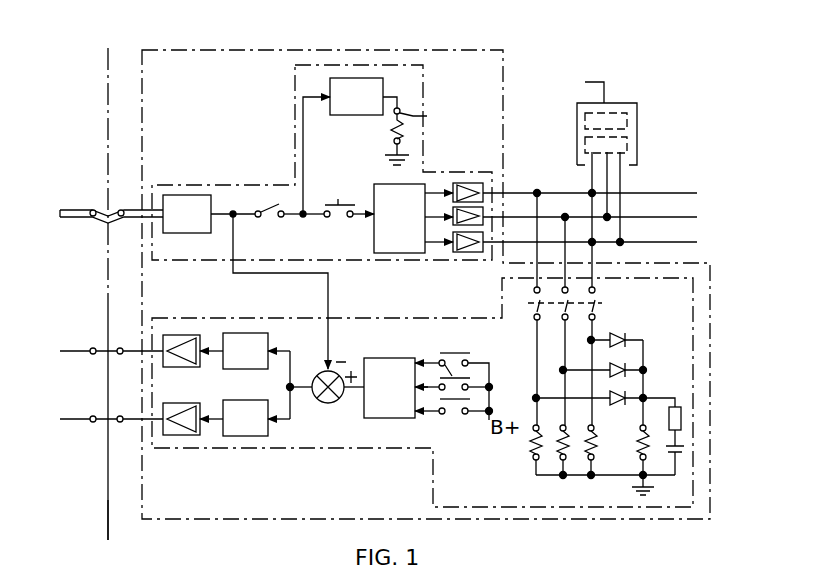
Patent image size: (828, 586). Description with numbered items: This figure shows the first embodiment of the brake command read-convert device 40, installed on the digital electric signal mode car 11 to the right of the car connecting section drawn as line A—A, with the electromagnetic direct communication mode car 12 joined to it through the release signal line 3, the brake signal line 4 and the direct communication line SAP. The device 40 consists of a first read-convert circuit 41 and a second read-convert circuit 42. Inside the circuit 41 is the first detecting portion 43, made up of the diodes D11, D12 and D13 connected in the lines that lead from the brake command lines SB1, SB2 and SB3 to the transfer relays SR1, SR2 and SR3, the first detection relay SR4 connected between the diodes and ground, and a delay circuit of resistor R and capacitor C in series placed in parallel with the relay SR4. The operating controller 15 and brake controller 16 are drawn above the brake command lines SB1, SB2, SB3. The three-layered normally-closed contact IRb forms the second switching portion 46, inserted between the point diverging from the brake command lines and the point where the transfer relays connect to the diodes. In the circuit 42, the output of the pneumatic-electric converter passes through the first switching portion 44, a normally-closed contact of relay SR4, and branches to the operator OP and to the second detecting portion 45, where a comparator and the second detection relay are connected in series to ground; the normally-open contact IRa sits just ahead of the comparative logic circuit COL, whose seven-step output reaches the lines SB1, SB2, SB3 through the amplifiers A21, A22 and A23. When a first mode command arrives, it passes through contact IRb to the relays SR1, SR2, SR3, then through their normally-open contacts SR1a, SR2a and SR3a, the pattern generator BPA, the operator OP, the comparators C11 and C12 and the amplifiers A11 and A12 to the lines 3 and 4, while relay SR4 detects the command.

The release signal line 3 is at (72, 351).
The brake signal line 4 is at (72, 419).
The digital electric signal mode car 11 is at (111, 533).
The electromagnetic direct communication mode car 12 is at (104, 536).
The operating controller 15 is at (629, 123).
The brake controller 16 is at (629, 148).
The brake command read-convert device 40 is at (302, 48).
The first read-convert circuit 41 is at (297, 450).
The second read-convert circuit 42 is at (293, 90).
The first detecting portion 43 is at (692, 428).
The first switching portion 44 is at (268, 206).
The second detecting portion 45 is at (391, 88).
The second switching portion 46 is at (597, 303).
The direct communication line SAP is at (81, 206).
The normally-open contact IRa is at (337, 197).
The normally-closed contact IRb is at (530, 304).
The comparative logic circuit COL is at (413, 218).
The amplifier A21 is at (484, 185).
The amplifier A22 is at (452, 215).
The amplifier A23 is at (467, 252).
The brake command line SB1 is at (706, 182).
The brake command line SB2 is at (706, 206).
The brake command line SB3 is at (706, 231).
The diode D11 is at (610, 338).
The diode D12 is at (622, 361).
The diode D13 is at (622, 389).
The transfer relay SR1 is at (532, 442).
The transfer relay SR2 is at (560, 455).
The transfer relay SR3 is at (586, 462).
The first detection relay SR4 is at (636, 460).
The resistor R is at (682, 418).
The capacitor C is at (668, 449).
The pattern generator BPA is at (386, 388).
The normally-open contact SR1a is at (465, 342).
The normally-open contact SR2a is at (436, 360).
The normally-open contact SR3a is at (455, 401).
The operator OP is at (312, 392).
The comparator C11 is at (234, 351).
The comparator C12 is at (234, 418).
The amplifier A11 is at (180, 335).
The amplifier A12 is at (177, 403).